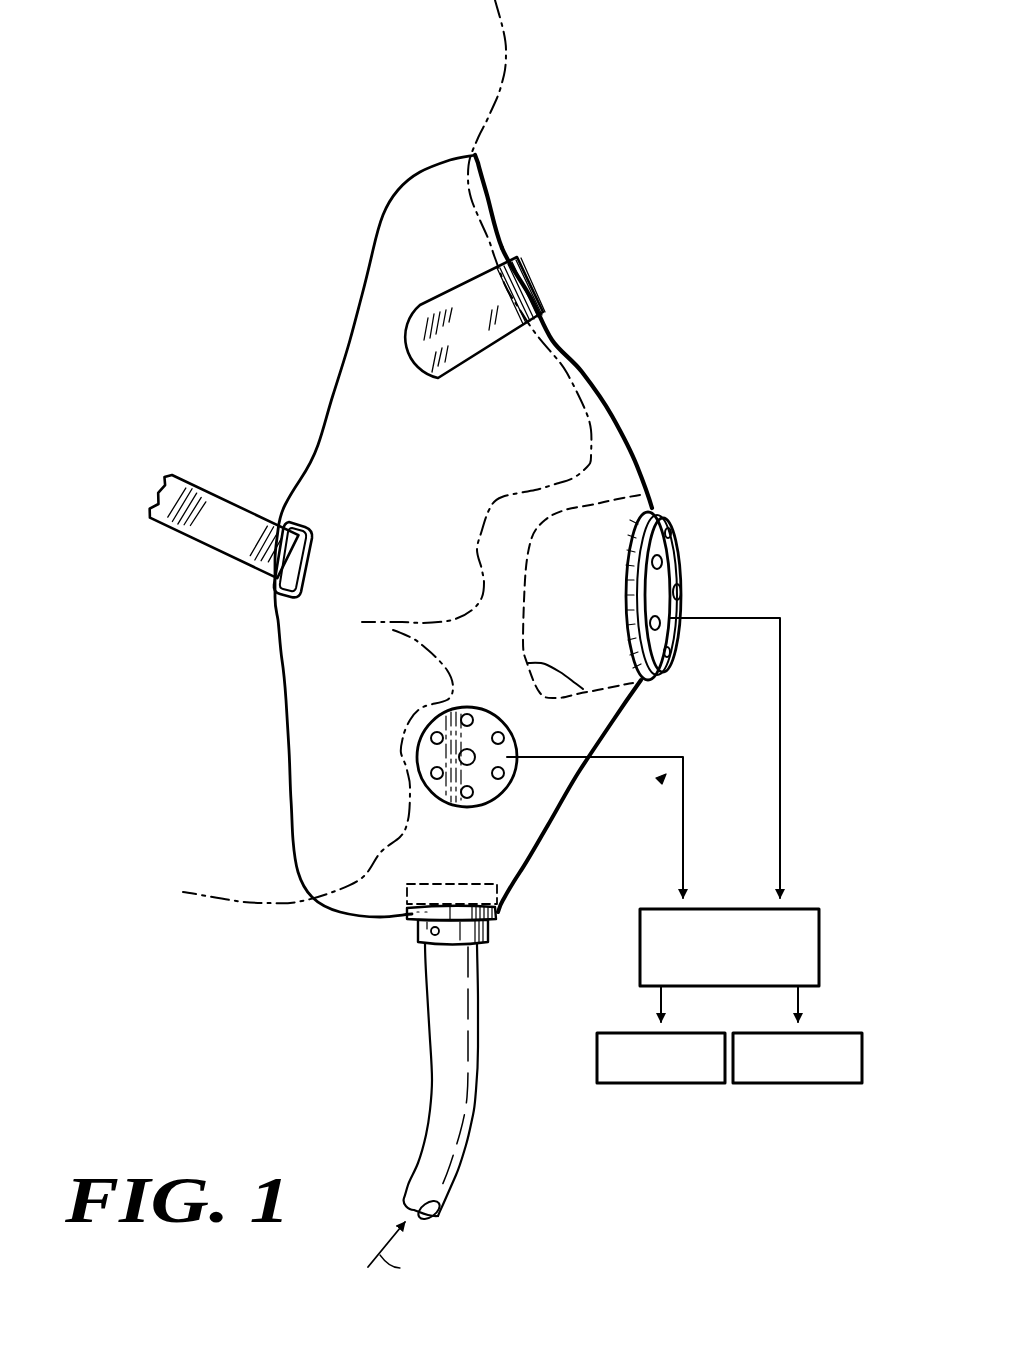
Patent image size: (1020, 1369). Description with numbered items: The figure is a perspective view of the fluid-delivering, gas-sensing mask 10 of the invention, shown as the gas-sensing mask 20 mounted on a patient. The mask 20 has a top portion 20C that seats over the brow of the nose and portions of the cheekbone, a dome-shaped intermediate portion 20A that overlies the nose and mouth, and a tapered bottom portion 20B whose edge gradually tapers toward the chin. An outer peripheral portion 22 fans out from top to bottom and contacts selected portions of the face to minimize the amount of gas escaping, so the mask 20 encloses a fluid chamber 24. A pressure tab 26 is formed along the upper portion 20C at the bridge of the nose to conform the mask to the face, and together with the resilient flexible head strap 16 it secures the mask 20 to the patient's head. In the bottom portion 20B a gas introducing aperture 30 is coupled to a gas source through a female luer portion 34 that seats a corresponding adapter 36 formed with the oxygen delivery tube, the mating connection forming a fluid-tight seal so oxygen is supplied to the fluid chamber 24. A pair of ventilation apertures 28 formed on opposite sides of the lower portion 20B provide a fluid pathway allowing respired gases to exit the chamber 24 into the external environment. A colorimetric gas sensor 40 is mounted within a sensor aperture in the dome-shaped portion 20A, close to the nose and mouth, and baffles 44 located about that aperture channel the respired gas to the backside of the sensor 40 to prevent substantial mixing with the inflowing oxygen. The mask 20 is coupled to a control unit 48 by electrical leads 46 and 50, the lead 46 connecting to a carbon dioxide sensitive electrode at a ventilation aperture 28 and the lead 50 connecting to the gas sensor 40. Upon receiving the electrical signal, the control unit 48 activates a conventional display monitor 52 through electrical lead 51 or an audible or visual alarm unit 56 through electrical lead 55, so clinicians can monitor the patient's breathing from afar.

The gas-sensing mask 10 is at (660, 198).
The head strap 16 is at (210, 505).
The gas-sensing mask 20 is at (588, 364).
The dome-shaped intermediate portion 20A is at (647, 483).
The bottom portion 20B is at (683, 800).
The top portion 20C is at (498, 213).
The outer peripheral portion 22 is at (348, 345).
The fluid chamber 24 is at (524, 542).
The pressure tab 26 is at (538, 287).
The ventilation aperture 28 is at (518, 740).
The gas introducing aperture 30 is at (505, 920).
The female luer portion 34 is at (406, 896).
The adapter 36 is at (414, 940).
The gas sensor 40 is at (677, 577).
The baffles 44 is at (528, 665).
The electrical lead 46 is at (660, 757).
The control unit 48 is at (803, 907).
The electrical lead 50 is at (782, 707).
The electrical lead 51 is at (660, 998).
The monitor 52 is at (668, 1084).
The electrical lead 55 is at (800, 1001).
The alarm unit 56 is at (803, 1084).